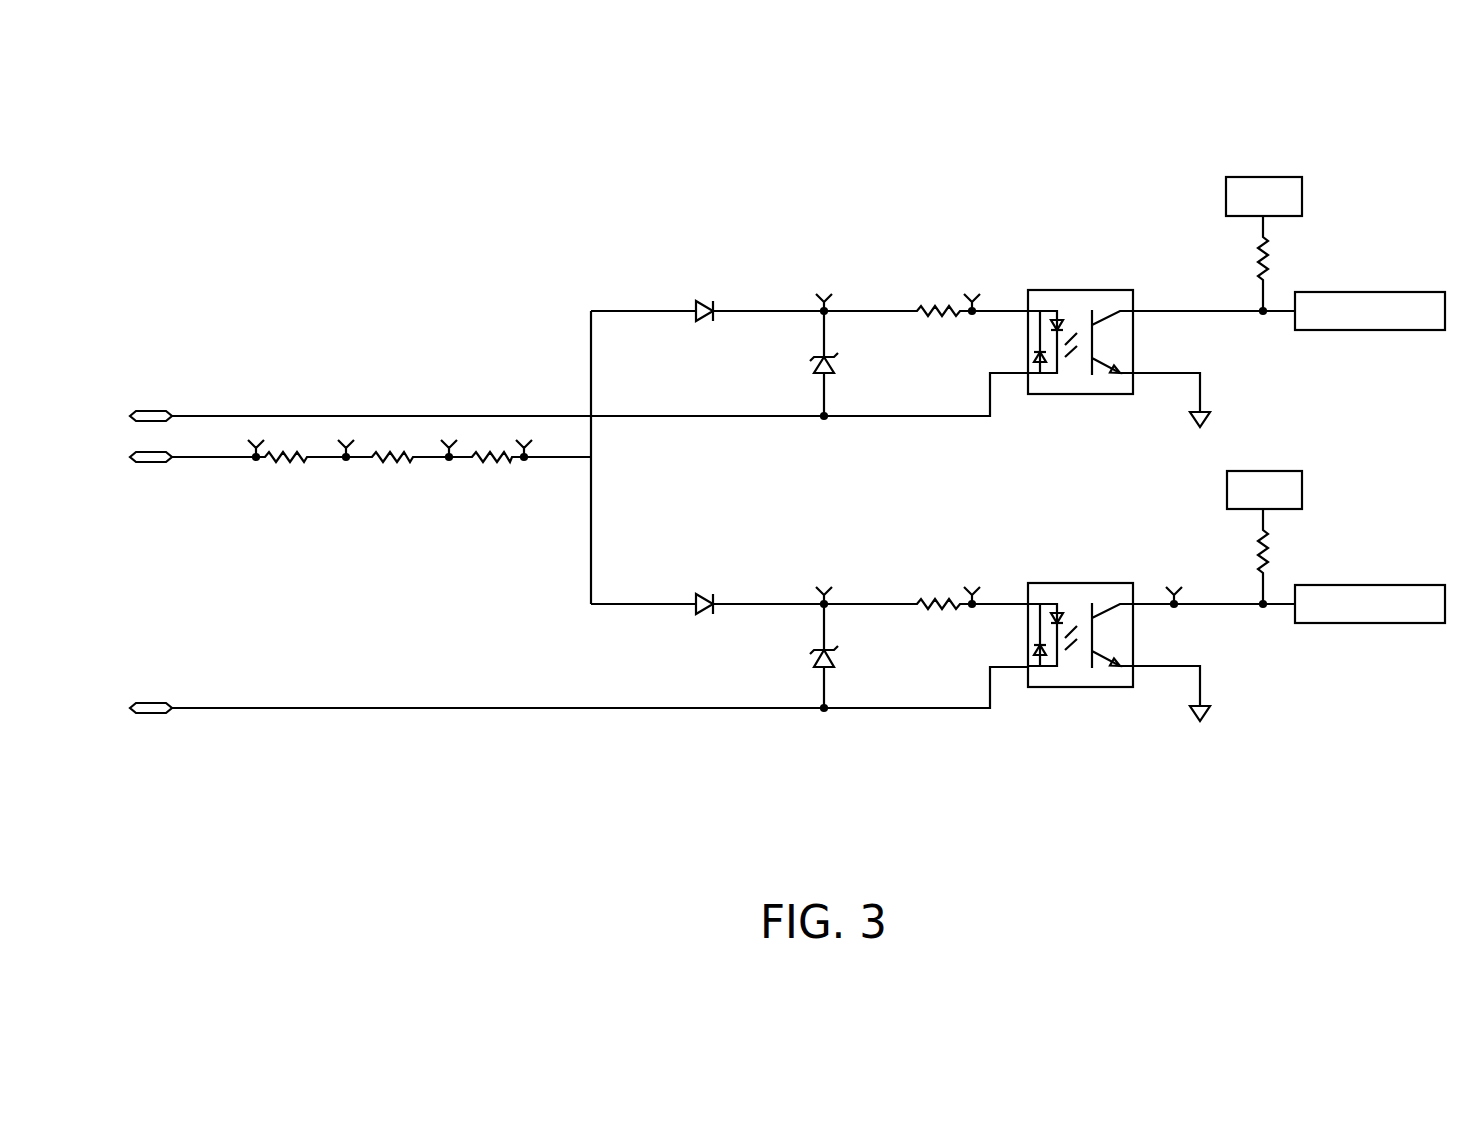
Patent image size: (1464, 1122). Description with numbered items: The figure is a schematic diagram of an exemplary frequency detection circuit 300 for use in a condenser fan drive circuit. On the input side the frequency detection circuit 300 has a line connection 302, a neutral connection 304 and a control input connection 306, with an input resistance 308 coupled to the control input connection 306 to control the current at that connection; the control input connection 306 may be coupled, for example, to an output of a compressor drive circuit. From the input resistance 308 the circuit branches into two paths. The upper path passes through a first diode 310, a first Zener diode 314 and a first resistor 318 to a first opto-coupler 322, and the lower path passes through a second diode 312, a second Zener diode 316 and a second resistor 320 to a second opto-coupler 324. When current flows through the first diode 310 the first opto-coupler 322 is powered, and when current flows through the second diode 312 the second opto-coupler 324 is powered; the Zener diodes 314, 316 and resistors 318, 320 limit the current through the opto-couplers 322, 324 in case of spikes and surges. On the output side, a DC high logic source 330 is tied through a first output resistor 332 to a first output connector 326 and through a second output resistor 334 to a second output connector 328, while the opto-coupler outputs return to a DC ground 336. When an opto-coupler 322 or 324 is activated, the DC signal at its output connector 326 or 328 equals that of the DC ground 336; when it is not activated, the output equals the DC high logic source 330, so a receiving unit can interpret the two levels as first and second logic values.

The frequency detection circuit 300 is at (1225, 125).
The line connection 302 is at (152, 410).
The neutral connection 304 is at (152, 702).
The control input connection 306 is at (152, 452).
The input resistance 308 is at (397, 425).
The first diode 310 is at (705, 300).
The second diode 312 is at (710, 593).
The first Zener diode 314 is at (832, 358).
The second Zener diode 316 is at (832, 650).
The first resistor 318 is at (935, 300).
The second resistor 320 is at (935, 596).
The first opto-coupler 322 is at (1080, 290).
The second opto-coupler 324 is at (1075, 583).
The first output connector 326 is at (1355, 292).
The second output connector 328 is at (1368, 585).
The DC high logic source 330 is at (1280, 177).
The first output resistor 332 is at (1275, 252).
The second output resistor 334 is at (1268, 538).
The DC ground 336 is at (1212, 414).